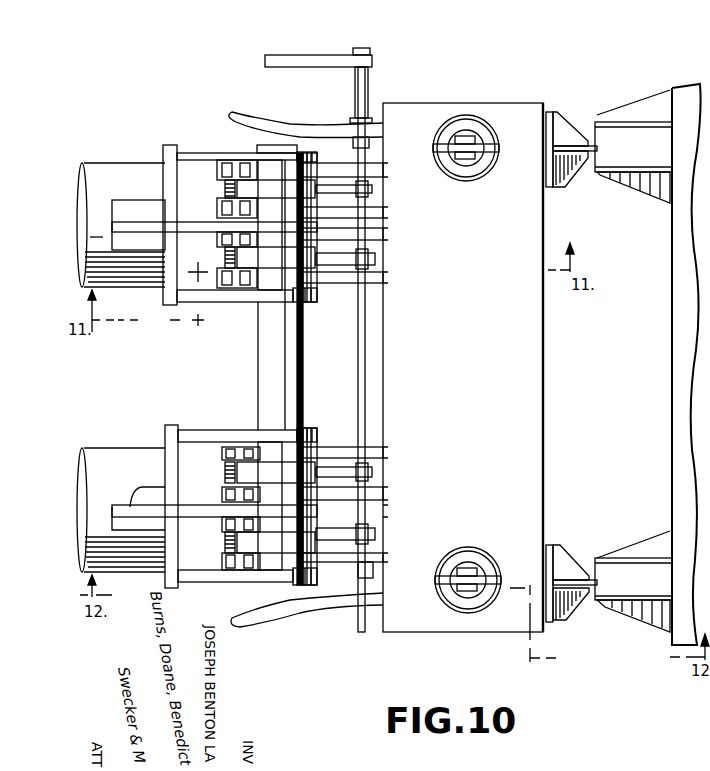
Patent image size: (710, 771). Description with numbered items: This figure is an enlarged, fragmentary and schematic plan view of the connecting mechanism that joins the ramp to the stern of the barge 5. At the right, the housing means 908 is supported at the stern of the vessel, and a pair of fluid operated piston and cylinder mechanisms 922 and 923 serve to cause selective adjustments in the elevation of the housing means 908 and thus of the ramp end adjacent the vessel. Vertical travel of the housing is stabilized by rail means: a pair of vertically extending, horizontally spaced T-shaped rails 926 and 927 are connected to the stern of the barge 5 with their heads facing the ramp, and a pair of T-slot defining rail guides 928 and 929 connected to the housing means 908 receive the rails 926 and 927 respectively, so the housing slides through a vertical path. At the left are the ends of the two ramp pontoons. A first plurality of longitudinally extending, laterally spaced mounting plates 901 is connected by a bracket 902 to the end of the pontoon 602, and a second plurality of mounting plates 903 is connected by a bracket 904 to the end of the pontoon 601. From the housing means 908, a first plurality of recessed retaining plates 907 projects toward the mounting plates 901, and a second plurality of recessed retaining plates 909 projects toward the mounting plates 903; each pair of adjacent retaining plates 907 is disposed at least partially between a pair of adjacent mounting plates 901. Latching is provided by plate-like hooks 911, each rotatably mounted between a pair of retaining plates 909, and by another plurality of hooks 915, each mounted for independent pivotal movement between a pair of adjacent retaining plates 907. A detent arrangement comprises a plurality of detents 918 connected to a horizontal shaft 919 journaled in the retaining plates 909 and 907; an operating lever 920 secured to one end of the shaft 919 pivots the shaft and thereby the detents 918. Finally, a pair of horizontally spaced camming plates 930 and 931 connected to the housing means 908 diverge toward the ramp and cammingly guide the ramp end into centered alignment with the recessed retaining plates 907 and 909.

The barge 5 is at (672, 281).
The housing means 908 is at (488, 327).
The piston and cylinder mechanism 923 is at (467, 166).
The piston and cylinder mechanism 922 is at (466, 562).
The rail guide 929 is at (574, 184).
The T-shaped rail 927 is at (590, 170).
The rail guide 928 is at (571, 555).
The T-shaped rail 926 is at (600, 556).
The horizontal shaft 919 is at (382, 314).
The operating lever 920 is at (275, 60).
The camming plate 930 is at (238, 115).
The camming plate 931 is at (250, 618).
The pontoon 602 is at (134, 290).
The bracket 902 is at (174, 148).
The mounting plates 901 is at (228, 303).
The hooks 915 is at (277, 266).
The recessed retaining plates 907 is at (328, 284).
The detents 918 is at (380, 262).
The pontoon 601 is at (148, 448).
The mounting plates 903 is at (183, 430).
The bracket 904 is at (184, 590).
The hooks 911 is at (281, 551).
The recessed retaining plates 909 is at (330, 446).